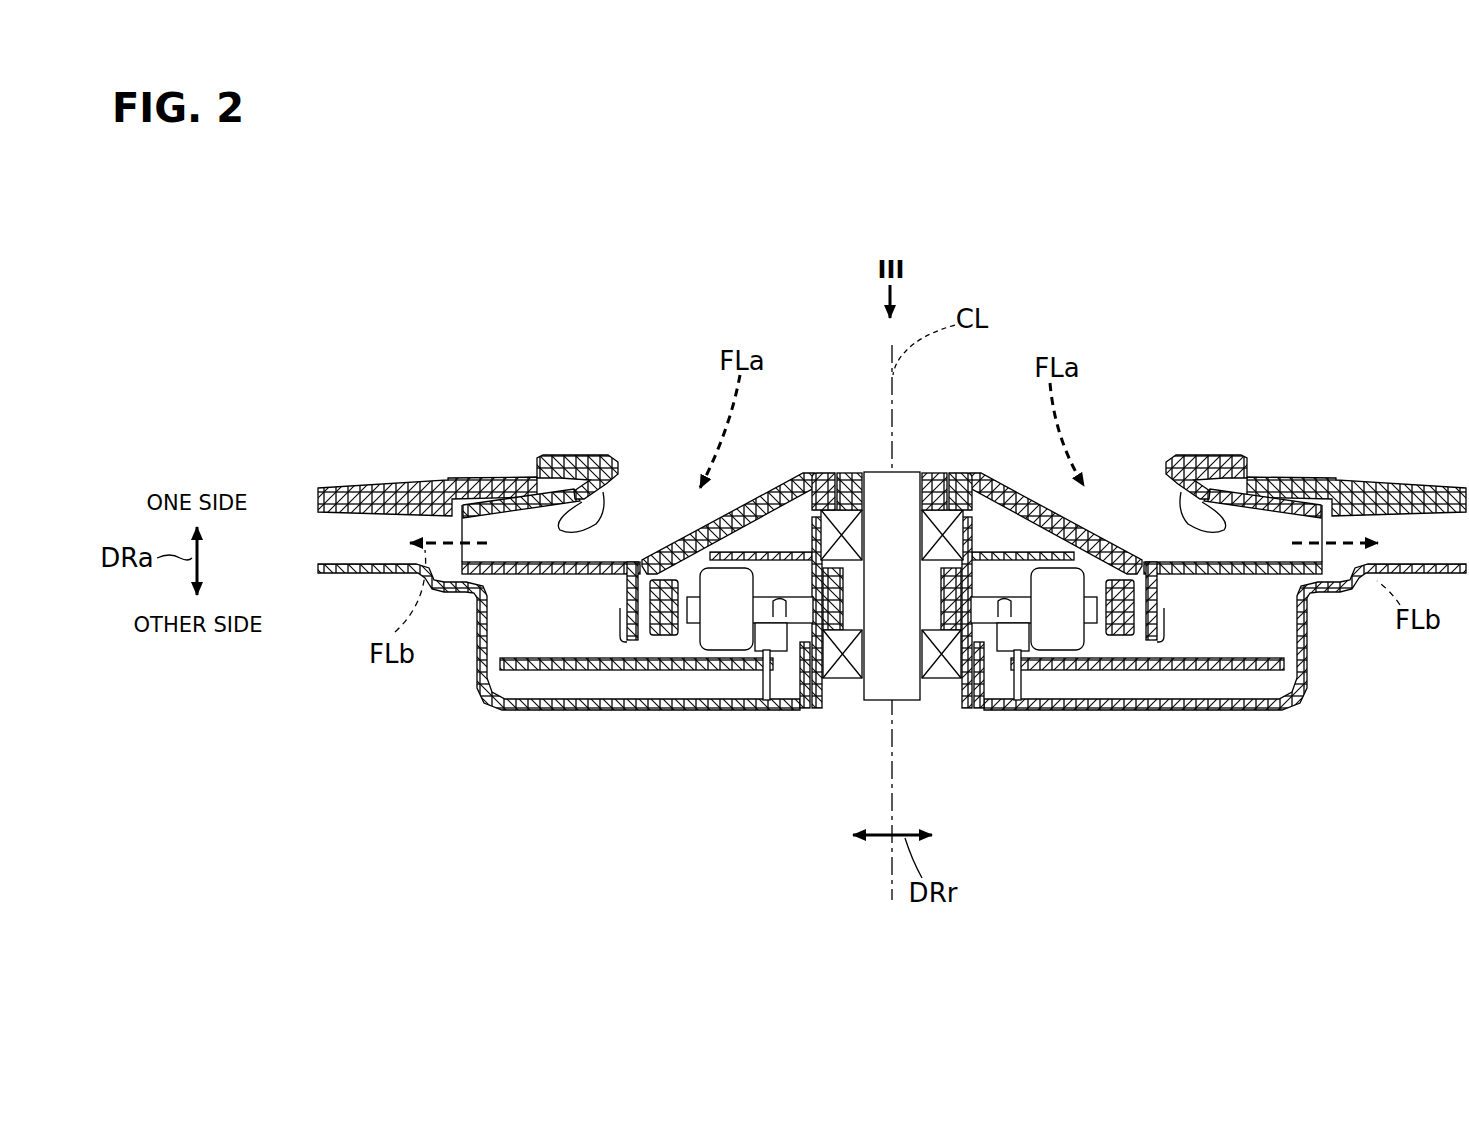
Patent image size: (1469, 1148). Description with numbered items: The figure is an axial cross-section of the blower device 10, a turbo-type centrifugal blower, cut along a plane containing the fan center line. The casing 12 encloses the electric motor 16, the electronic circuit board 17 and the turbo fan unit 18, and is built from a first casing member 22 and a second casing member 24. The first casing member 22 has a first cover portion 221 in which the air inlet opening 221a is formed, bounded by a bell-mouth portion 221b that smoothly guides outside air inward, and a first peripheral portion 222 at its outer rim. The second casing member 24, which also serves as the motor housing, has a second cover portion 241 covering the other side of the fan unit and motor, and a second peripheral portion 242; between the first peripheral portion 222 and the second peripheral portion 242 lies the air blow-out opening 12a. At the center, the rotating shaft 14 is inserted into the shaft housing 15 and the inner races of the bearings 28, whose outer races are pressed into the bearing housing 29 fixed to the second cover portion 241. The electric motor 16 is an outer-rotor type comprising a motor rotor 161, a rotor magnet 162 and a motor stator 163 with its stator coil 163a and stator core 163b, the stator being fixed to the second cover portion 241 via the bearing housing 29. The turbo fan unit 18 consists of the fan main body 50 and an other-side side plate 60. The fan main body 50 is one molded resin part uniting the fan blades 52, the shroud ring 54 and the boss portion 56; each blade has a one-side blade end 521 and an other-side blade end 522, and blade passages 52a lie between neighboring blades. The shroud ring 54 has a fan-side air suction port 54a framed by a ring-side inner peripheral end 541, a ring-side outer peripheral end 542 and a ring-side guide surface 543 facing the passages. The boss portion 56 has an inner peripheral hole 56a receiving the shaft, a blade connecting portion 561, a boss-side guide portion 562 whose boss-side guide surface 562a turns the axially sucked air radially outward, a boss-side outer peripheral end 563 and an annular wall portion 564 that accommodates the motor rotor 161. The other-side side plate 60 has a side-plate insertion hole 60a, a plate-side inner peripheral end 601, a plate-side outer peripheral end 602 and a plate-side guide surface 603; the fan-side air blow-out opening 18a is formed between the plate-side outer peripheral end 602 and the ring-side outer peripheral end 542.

The blower device 10 is at (1366, 271).
The casing 12 is at (461, 424).
The air blow-out opening 12a is at (323, 543).
The rotating shaft 14 is at (905, 693).
The shaft housing 15 is at (893, 445).
The electric motor 16 is at (895, 743).
The motor rotor 161 is at (892, 693).
The rotor magnet 162 is at (664, 636).
The motor stator 163 is at (882, 743).
The stator coil 163a is at (725, 636).
The stator core 163b is at (778, 625).
The electronic circuit board 17 is at (577, 671).
The turbo fan unit 18 is at (796, 470).
The fan-side air blow-out opening 18a is at (1279, 436).
The first casing member 22 is at (461, 424).
The first cover portion 221 is at (461, 424).
The air inlet opening 221a is at (1097, 461).
The bell-mouth portion 221b is at (620, 470).
The first peripheral portion 222 is at (461, 424).
The second casing member 24 is at (870, 691).
The second cover portion 241 is at (870, 691).
The second peripheral portion 242 is at (320, 577).
The bearings 28 is at (845, 679).
The bearing housing 29 is at (807, 710).
The fan main body 50 is at (942, 568).
The fan blades 52 is at (888, 519).
The blade passages 52a is at (553, 502).
The one-side blade end 521 is at (500, 506).
The other-side blade end 522 is at (528, 576).
The shroud ring 54 is at (1265, 435).
The fan-side air suction port 54a is at (1083, 476).
The ring-side inner peripheral end 541 is at (1205, 480).
The ring-side outer peripheral end 542 is at (1279, 433).
The ring-side guide surface 543 is at (561, 414).
The boss portion 56 is at (851, 578).
The inner peripheral hole 56a is at (938, 471).
The blade connecting portion 561 is at (648, 553).
The boss-side guide portion 562 is at (883, 434).
The boss-side guide surface 562a is at (883, 434).
The boss-side outer peripheral end 563 is at (823, 712).
The annular wall portion 564 is at (633, 642).
The other-side side plate 60 is at (870, 700).
The side-plate insertion hole 60a is at (870, 700).
The plate-side inner peripheral end 601 is at (870, 700).
The plate-side outer peripheral end 602 is at (870, 700).
The plate-side guide surface 603 is at (870, 700).